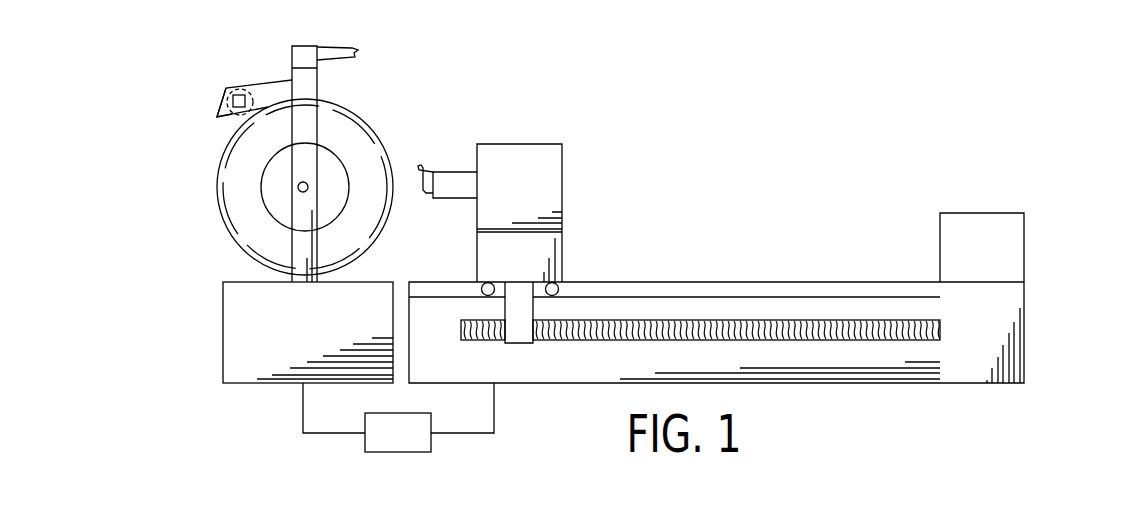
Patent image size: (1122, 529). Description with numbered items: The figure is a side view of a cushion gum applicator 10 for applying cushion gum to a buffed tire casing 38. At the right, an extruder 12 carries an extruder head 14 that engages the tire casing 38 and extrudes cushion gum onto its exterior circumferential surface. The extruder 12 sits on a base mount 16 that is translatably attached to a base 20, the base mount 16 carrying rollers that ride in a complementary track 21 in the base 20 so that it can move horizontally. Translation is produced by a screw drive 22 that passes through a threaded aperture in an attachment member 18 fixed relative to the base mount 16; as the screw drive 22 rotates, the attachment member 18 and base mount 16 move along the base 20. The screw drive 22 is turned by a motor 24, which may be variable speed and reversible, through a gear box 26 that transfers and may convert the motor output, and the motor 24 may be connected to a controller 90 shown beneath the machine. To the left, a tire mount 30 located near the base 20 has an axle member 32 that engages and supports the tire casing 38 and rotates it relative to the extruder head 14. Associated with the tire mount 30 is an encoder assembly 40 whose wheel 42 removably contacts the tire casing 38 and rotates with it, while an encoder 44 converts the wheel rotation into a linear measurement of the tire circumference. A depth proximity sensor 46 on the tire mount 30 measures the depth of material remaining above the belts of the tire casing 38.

The cushion gum applicator 10 is at (816, 198).
The extruder 12 is at (562, 184).
The extruder head 14 is at (446, 196).
The base mount 16 is at (562, 250).
The attachment member 18 is at (520, 340).
The base 20 is at (736, 281).
The track 21 is at (845, 297).
The screw drive 22 is at (835, 341).
The motor 24 is at (1016, 240).
The gear box 26 is at (1016, 336).
The tire mount 30 is at (313, 257).
The axle member 32 is at (298, 187).
The tire casing 38 is at (243, 239).
The encoder assembly 40 is at (220, 80).
The wheel 42 is at (221, 119).
The encoder 44 is at (232, 98).
The depth proximity sensor 46 is at (292, 56).
The controller 90 is at (396, 438).